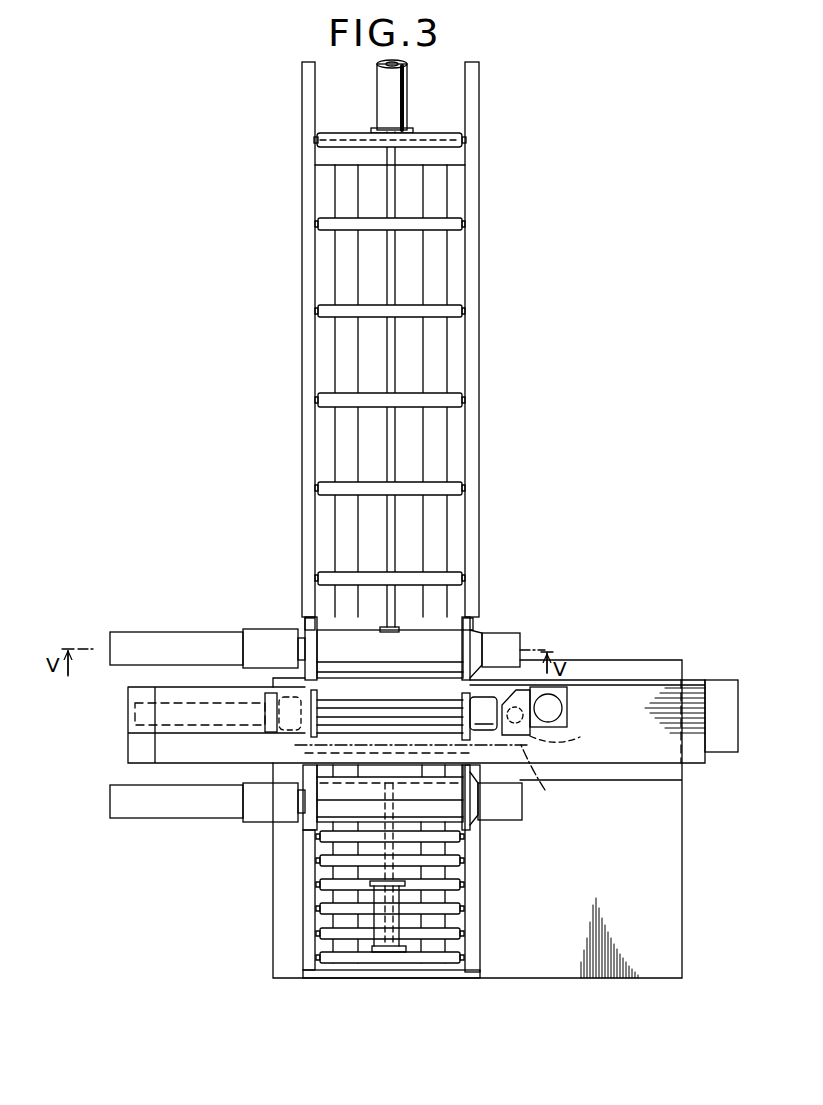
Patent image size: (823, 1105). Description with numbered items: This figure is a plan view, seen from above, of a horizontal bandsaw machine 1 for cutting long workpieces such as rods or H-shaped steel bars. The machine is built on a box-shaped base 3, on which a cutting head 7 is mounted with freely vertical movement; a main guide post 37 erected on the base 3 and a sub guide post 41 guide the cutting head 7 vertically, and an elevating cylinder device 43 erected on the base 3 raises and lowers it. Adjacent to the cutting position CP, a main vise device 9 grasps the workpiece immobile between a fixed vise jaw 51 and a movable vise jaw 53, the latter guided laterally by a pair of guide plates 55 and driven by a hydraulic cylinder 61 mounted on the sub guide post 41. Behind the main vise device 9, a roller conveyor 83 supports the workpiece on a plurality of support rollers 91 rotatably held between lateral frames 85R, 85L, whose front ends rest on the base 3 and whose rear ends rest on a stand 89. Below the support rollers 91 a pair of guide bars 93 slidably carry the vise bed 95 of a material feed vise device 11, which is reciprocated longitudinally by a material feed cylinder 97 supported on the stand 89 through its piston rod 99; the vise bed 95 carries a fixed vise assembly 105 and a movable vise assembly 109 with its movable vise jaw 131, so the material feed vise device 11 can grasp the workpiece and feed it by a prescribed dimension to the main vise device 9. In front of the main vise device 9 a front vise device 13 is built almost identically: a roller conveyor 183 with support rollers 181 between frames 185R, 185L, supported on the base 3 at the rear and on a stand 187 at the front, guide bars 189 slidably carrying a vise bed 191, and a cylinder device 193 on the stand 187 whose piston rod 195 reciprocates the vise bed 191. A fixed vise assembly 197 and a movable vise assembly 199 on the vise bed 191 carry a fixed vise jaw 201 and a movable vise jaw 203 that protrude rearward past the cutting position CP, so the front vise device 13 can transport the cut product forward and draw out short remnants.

The horizontal bandsaw machine 1 is at (650, 641).
The base 3 is at (681, 900).
The cutting head 7 is at (601, 761).
The main vise device 9 is at (485, 700).
The material feed vise device 11 is at (484, 627).
The front vise device 13 is at (497, 830).
The main guide post 37 is at (563, 712).
The sub guide post 41 is at (271, 716).
The elevating cylinder device 43 is at (560, 737).
The fixed vise jaw 51 is at (484, 713).
The movable vise jaw 53 is at (306, 722).
The guide plates 55 is at (392, 725).
The hydraulic cylinder 61 is at (177, 736).
The roller conveyor 83 is at (404, 346).
The lateral frame 85L is at (307, 340).
The lateral frame 85R is at (481, 338).
The stand 89 is at (458, 158).
The support rollers 91 is at (326, 308).
The guide bars 93 is at (440, 278).
The vise bed 95 is at (470, 624).
The material feed cylinder 97 is at (407, 96).
The piston rod 99 is at (396, 450).
The fixed vise assembly 105 is at (520, 627).
The movable vise assembly 109 is at (231, 627).
The movable vise jaw 131 is at (310, 621).
The support rollers 181 is at (456, 907).
The roller conveyor 183 is at (387, 889).
The frame 185L is at (311, 940).
The frame 185R is at (477, 946).
The stand 187 is at (447, 976).
The guide bars 189 is at (430, 949).
The vise bed 191 is at (350, 813).
The cylinder device 193 is at (341, 890).
The piston rod 195 is at (331, 875).
The fixed vise assembly 197 is at (524, 812).
The movable vise assembly 199 is at (267, 813).
The fixed vise jaw 201 is at (497, 798).
The movable vise jaw 203 is at (306, 802).
The cutting position CP is at (545, 778).